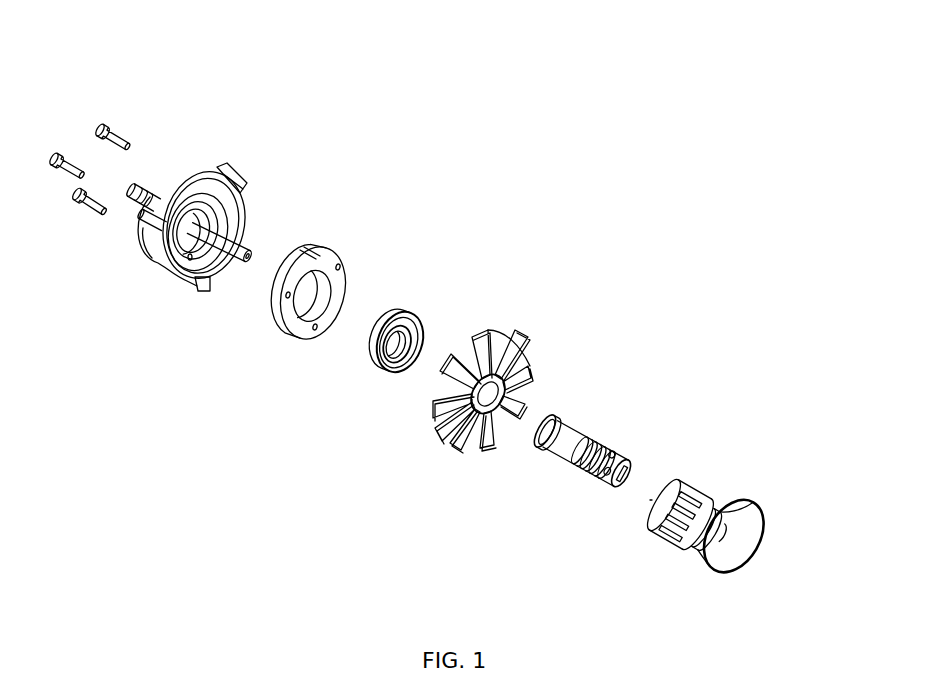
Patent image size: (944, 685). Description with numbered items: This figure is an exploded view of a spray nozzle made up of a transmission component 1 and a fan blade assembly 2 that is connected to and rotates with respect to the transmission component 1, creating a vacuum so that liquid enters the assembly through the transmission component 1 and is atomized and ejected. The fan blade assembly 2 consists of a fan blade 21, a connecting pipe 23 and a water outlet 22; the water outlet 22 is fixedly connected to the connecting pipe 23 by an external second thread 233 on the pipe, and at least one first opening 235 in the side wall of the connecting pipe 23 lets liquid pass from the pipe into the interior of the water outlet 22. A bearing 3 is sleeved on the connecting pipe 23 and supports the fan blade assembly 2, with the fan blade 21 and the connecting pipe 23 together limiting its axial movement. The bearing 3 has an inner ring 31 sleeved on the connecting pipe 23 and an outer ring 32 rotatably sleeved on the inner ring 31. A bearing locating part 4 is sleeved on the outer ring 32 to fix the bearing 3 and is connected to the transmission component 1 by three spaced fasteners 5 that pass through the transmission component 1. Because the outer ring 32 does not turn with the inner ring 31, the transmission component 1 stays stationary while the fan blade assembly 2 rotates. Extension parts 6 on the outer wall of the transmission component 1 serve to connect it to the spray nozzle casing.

The transmission component 1 is at (245, 186).
The fan blade assembly 2 is at (620, 218).
The bearing 3 is at (405, 285).
The bearing locating part 4 is at (318, 248).
The fastener 5 is at (112, 133).
The extension part 6 is at (145, 238).
The fan blade 21 is at (517, 343).
The water outlet 22 is at (718, 502).
The connecting pipe 23 is at (558, 437).
The inner ring 31 is at (405, 338).
The outer ring 32 is at (378, 340).
The second thread 233 is at (583, 460).
The first opening 235 is at (603, 473).